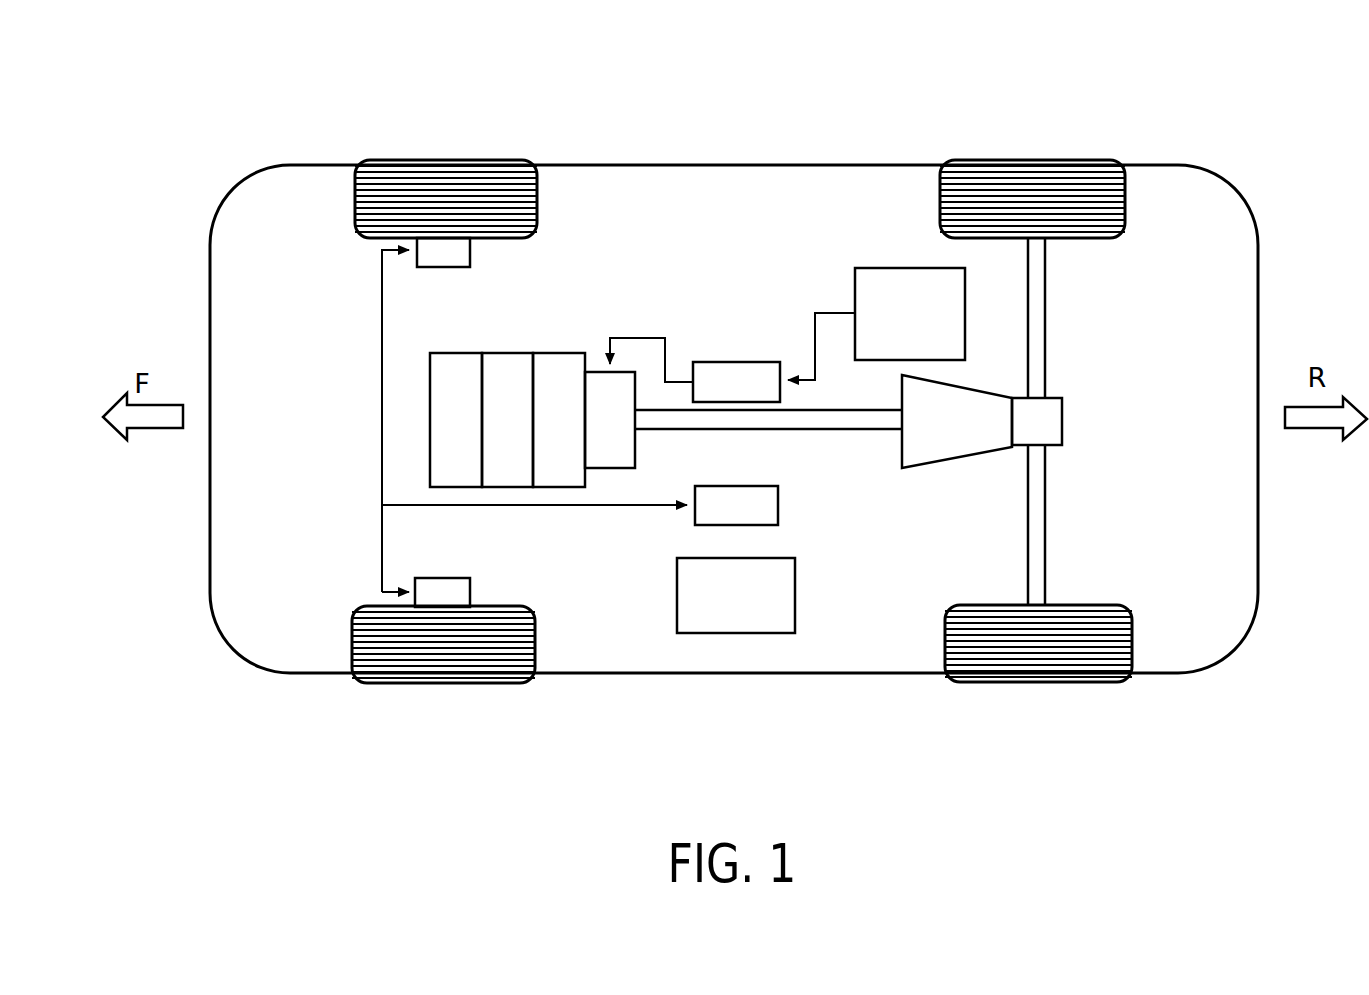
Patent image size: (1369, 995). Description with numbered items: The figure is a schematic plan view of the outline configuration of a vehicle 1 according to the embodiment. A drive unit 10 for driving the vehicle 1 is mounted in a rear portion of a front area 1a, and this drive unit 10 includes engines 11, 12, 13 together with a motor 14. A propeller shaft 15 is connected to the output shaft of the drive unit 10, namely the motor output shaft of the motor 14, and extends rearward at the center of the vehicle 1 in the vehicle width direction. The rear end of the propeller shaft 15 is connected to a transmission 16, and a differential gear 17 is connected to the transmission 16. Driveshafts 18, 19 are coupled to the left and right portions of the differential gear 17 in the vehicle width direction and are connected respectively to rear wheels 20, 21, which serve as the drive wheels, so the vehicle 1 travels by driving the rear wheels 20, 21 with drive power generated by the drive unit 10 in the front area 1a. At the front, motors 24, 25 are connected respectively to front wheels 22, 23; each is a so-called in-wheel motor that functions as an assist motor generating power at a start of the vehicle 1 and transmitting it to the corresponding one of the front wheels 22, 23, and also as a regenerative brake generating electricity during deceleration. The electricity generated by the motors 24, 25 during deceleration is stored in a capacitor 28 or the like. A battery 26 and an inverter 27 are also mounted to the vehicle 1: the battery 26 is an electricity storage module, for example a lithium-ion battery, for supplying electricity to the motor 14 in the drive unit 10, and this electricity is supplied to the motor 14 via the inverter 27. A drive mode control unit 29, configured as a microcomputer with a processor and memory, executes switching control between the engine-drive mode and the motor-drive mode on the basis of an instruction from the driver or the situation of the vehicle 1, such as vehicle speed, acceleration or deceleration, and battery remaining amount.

The vehicle 1 is at (1200, 130).
The front area 1a is at (310, 457).
The drive unit 10 is at (571, 578).
The engine 11 is at (455, 458).
The engine 12 is at (508, 455).
The engine 13 is at (557, 455).
The motor 14 is at (613, 447).
The propeller shaft 15 is at (840, 420).
The transmission 16 is at (950, 417).
The differential gear 17 is at (1062, 407).
The driveshaft 18 is at (1040, 555).
The driveshaft 19 is at (1037, 313).
The rear wheel 20 is at (1080, 648).
The rear wheel 21 is at (1037, 178).
The front wheel 22 is at (398, 664).
The front wheel 23 is at (400, 178).
The motor 24 is at (417, 580).
The motor 25 is at (417, 245).
The battery 26 is at (903, 300).
The inverter 27 is at (738, 365).
The capacitor 28 is at (762, 507).
The drive mode control unit 29 is at (735, 610).